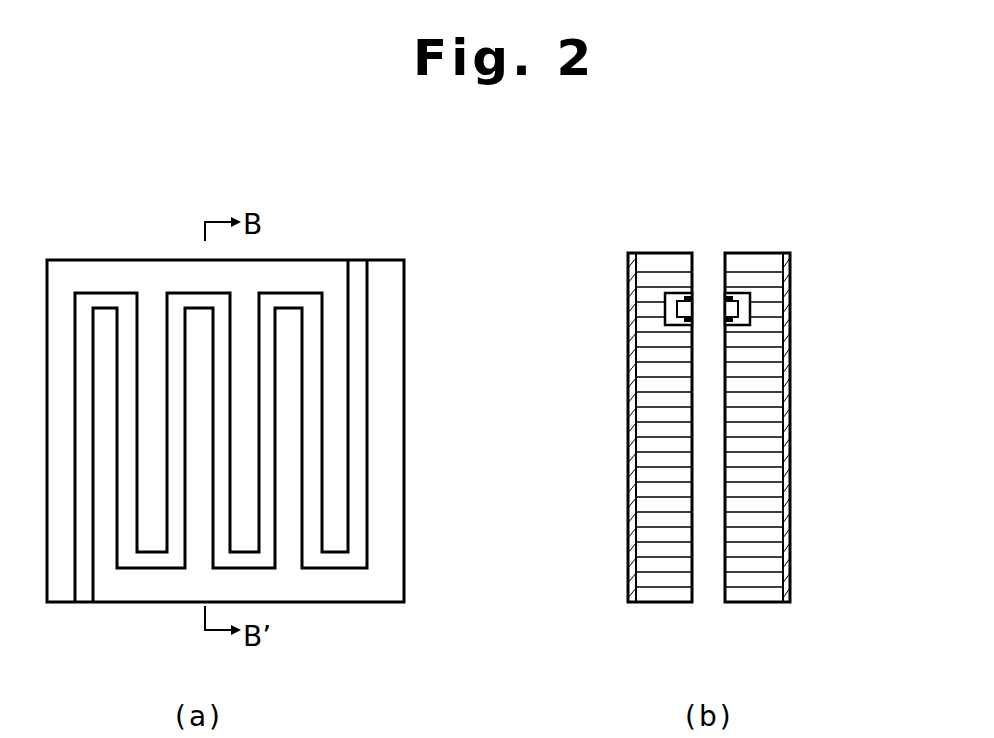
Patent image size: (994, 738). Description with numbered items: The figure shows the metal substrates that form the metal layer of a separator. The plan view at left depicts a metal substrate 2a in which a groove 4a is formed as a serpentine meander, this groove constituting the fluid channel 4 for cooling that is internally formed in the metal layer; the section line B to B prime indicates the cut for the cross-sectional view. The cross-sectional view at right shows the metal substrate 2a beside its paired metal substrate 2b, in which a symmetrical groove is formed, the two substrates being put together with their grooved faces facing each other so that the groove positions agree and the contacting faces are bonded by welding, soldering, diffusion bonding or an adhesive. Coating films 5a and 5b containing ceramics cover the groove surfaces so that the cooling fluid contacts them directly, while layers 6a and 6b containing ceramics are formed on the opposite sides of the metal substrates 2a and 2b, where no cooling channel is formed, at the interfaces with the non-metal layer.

The metal substrate 2a is at (395, 327).
The metal substrate 2b is at (760, 250).
The fluid channel for cooling 4 is at (750, 308).
The groove 4a is at (312, 438).
The coating film 5a is at (672, 320).
The coating film 5b is at (750, 323).
The layer containing ceramics 6a is at (630, 512).
The layer containing ceramics 6b is at (788, 440).